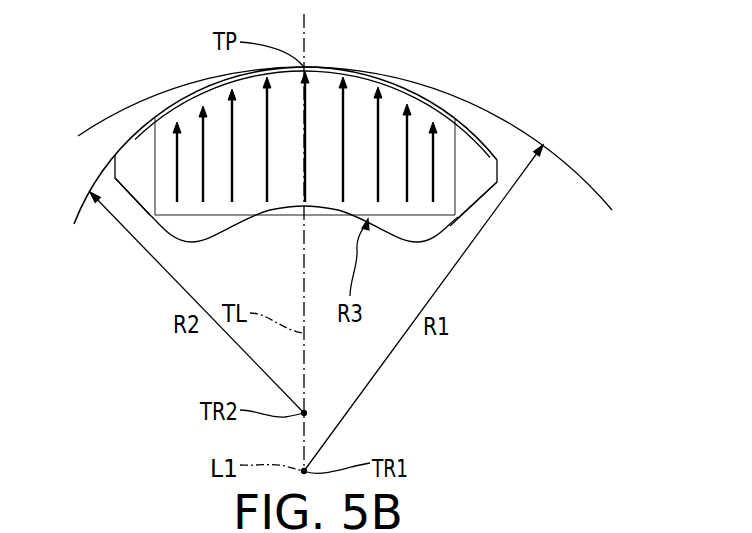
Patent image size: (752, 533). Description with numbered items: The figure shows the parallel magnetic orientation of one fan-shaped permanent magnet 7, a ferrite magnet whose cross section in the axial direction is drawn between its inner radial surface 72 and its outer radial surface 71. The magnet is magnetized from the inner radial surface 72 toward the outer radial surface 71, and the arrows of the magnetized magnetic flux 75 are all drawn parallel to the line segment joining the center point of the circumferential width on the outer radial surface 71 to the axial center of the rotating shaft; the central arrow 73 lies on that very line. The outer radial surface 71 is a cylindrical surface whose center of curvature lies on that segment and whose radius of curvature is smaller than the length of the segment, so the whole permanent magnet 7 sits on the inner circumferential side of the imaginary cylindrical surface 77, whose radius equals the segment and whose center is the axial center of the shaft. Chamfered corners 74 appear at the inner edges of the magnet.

The permanent magnet 7 is at (323, 169).
The outer radial surface 71 is at (181, 97).
The inner radial surface 72 is at (284, 211).
The central pressing force 73 is at (307, 118).
The chamfer 74 is at (133, 200).
The magnetized magnetic flux 75 is at (434, 155).
The imaginary cylindrical surface 77 is at (531, 134).